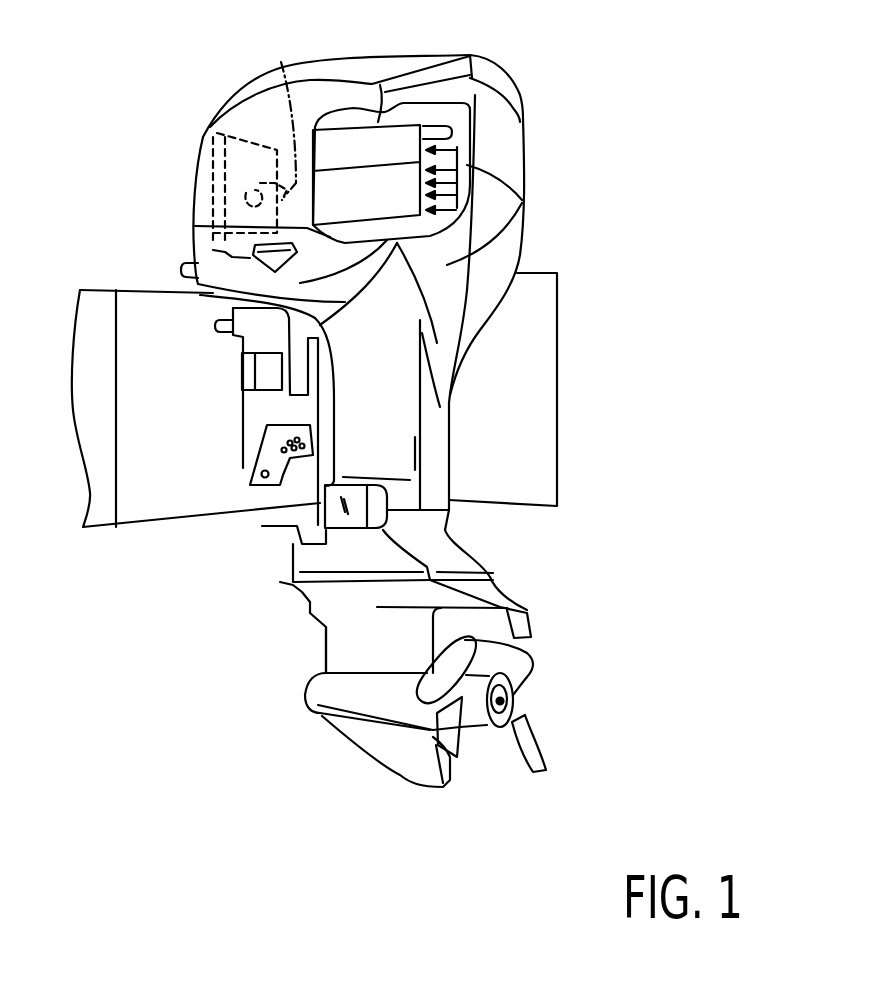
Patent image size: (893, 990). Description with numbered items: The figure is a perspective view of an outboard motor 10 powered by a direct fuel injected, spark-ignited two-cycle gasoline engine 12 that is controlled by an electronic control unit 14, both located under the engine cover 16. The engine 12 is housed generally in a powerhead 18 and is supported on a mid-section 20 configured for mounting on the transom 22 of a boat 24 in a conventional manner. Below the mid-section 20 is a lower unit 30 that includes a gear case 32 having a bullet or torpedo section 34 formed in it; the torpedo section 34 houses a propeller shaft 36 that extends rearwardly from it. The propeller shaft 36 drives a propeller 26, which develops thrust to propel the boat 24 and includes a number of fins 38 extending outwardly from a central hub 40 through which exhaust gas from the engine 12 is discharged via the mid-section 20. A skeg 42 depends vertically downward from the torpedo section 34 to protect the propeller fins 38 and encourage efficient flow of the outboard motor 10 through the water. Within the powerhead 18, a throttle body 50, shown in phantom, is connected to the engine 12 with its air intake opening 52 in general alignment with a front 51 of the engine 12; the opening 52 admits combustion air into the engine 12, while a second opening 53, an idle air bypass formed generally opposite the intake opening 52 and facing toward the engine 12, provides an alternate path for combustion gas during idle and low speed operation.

The outboard motor 10 is at (341, 415).
The engine 12 is at (440, 233).
The electronic control unit (ECU) 14 is at (402, 120).
The engine cover 16 is at (485, 70).
The powerhead 18 is at (533, 245).
The mid-section 20 is at (448, 465).
The transom 22 is at (173, 505).
The boat 24 is at (135, 270).
The propeller 26 is at (540, 658).
The lower unit 30 is at (522, 580).
The gear case 32 is at (326, 636).
The torpedo section 34 is at (367, 707).
The propeller shaft 36 is at (513, 700).
The fins 38 is at (520, 758).
The central hub 40 is at (512, 718).
The skeg 42 is at (400, 765).
The throttle body 50 is at (250, 132).
The front of engine 51 is at (130, 107).
The air intake opening 52 is at (200, 187).
The idle air bypass opening 53 is at (281, 115).